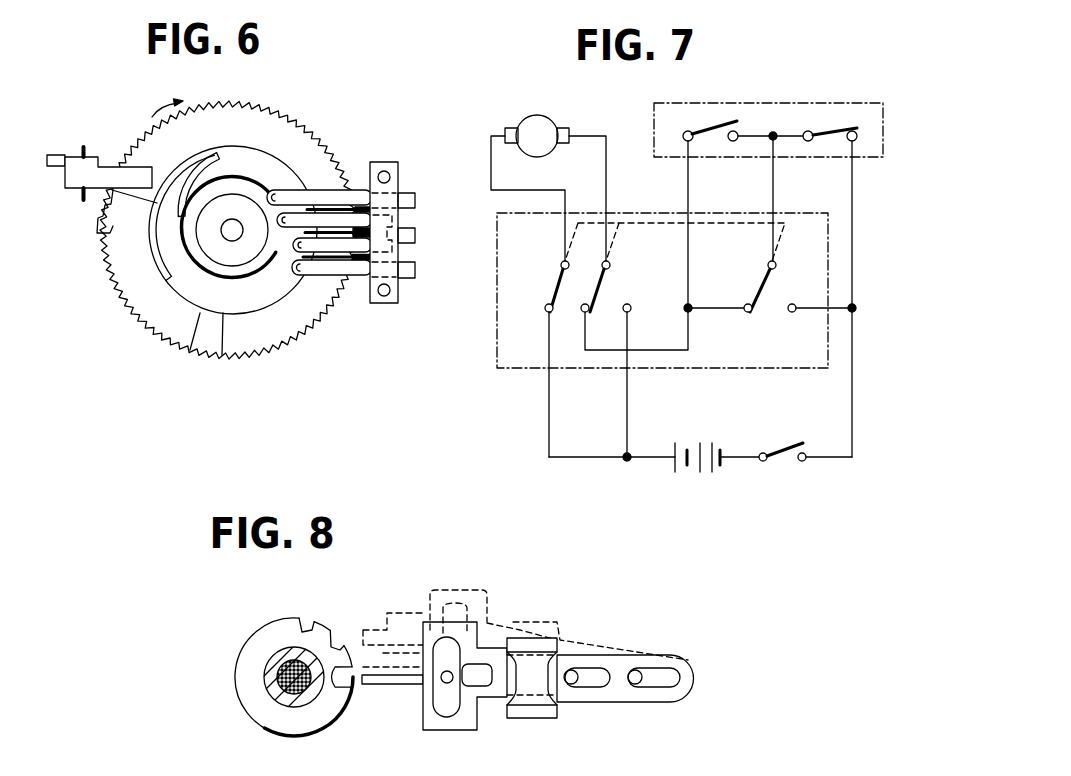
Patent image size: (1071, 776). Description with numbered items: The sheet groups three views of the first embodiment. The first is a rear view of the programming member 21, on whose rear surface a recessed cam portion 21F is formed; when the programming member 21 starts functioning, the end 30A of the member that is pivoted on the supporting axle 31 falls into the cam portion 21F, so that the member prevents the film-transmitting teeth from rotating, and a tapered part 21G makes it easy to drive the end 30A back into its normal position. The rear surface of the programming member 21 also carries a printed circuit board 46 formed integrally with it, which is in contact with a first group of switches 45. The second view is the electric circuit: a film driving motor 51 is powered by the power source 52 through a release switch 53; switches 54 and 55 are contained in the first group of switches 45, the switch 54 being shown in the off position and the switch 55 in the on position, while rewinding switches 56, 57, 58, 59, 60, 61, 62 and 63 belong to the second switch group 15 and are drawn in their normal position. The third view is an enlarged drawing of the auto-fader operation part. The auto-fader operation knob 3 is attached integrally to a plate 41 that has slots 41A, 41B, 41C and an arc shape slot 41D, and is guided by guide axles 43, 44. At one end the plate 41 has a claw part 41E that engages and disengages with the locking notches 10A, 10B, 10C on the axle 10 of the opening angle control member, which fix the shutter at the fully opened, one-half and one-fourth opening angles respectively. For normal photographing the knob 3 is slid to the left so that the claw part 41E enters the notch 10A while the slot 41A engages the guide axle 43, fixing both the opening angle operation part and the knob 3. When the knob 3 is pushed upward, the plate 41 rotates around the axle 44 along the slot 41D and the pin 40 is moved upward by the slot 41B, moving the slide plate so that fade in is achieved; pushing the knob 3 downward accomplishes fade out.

In FIG. 6, the programming member 21 is at (290, 322).
In FIG. 6, the cam portion 21F is at (115, 243).
In FIG. 6, the tapered part 21G is at (206, 345).
In FIG. 6, the end of member 30A is at (127, 170).
In FIG. 6, the supporting axle 31 is at (83, 147).
In FIG. 6, the first group of switches 45 is at (398, 184).
In FIG. 7, the first group of switches 45 is at (847, 118).
In FIG. 6, the printed circuit board 46 is at (250, 162).
In FIG. 7, the second switch group 15 is at (513, 240).
In FIG. 7, the film driving motor 51 is at (540, 125).
In FIG. 7, the power source 52 is at (715, 443).
In FIG. 7, the release switch 53 is at (785, 460).
In FIG. 7, the switch 54 is at (708, 122).
In FIG. 7, the switch 55 is at (793, 130).
In FIG. 7, the rewinding switch 56 is at (556, 281).
In FIG. 7, the rewinding switch 57 is at (602, 283).
In FIG. 7, the rewinding switch 58 is at (547, 313).
In FIG. 7, the rewinding switch 59 is at (582, 312).
In FIG. 7, the rewinding switch 60 is at (623, 312).
In FIG. 7, the rewinding switch 61 is at (765, 288).
In FIG. 7, the rewinding switch 62 is at (747, 312).
In FIG. 7, the rewinding switch 63 is at (792, 312).
In FIG. 8, the auto-fader operation knob 3 is at (532, 645).
In FIG. 8, the axle of the opening angle control member 10 is at (283, 703).
In FIG. 8, the locking notch 10A is at (350, 683).
In FIG. 8, the locking notch 10B is at (333, 633).
In FIG. 8, the locking notch 10C is at (310, 633).
In FIG. 8, the pin 40 is at (572, 673).
In FIG. 8, the plate 41 is at (622, 660).
In FIG. 8, the slot 41A is at (487, 697).
In FIG. 8, the slot 41B is at (597, 680).
In FIG. 8, the slot 41C is at (663, 680).
In FIG. 8, the arc shape slot 41D is at (423, 620).
In FIG. 8, the claw part 41E is at (370, 673).
In FIG. 8, the guide axle 43 is at (423, 682).
In FIG. 8, the guide axle 44 is at (637, 675).